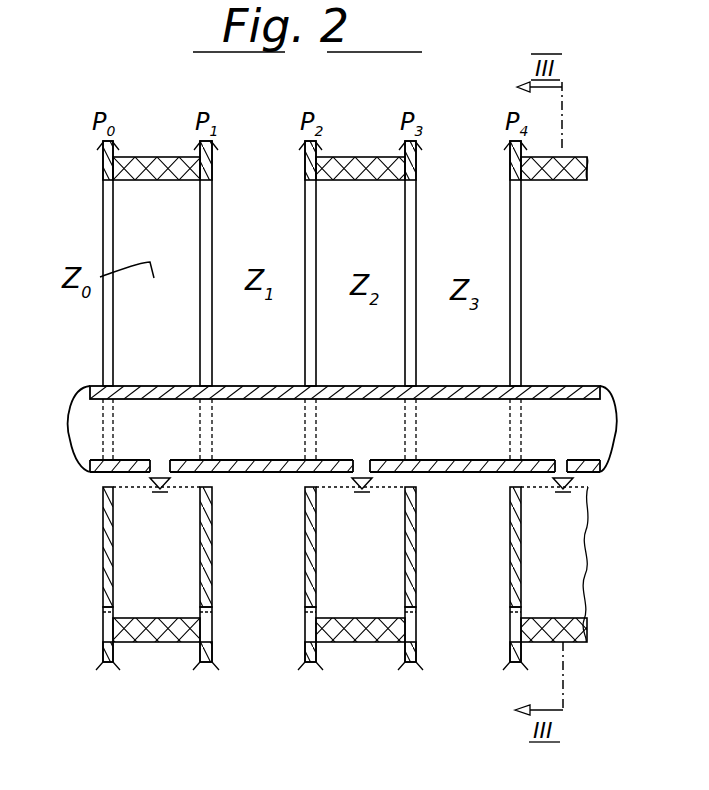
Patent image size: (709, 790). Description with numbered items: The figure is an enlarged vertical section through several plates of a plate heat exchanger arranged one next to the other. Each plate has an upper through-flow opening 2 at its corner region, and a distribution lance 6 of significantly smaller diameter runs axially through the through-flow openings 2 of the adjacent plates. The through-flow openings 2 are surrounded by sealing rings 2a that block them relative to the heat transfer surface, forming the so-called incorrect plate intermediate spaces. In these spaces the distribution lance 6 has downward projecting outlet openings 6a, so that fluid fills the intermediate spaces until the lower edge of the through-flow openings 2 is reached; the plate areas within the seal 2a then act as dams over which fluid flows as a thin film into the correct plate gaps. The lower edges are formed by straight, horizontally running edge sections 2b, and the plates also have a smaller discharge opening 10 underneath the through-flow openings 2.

The through-flow opening 2 is at (312, 214).
The sealing ring 2a is at (373, 642).
The edge section 2b is at (306, 488).
The distribution lance 6 is at (440, 386).
The outlet opening 6a is at (358, 470).
The discharge opening 10 is at (510, 612).